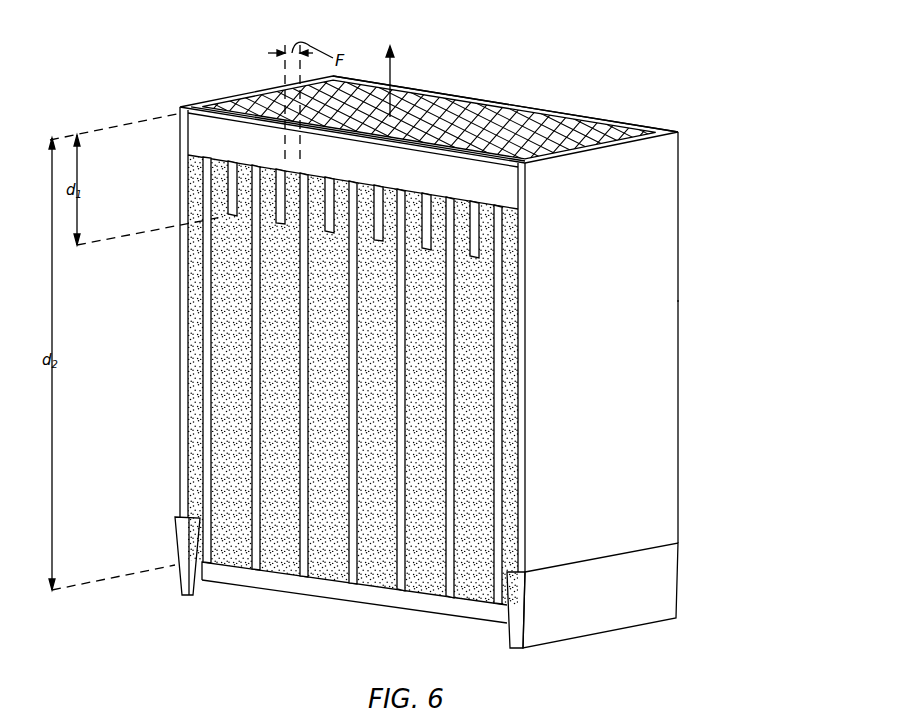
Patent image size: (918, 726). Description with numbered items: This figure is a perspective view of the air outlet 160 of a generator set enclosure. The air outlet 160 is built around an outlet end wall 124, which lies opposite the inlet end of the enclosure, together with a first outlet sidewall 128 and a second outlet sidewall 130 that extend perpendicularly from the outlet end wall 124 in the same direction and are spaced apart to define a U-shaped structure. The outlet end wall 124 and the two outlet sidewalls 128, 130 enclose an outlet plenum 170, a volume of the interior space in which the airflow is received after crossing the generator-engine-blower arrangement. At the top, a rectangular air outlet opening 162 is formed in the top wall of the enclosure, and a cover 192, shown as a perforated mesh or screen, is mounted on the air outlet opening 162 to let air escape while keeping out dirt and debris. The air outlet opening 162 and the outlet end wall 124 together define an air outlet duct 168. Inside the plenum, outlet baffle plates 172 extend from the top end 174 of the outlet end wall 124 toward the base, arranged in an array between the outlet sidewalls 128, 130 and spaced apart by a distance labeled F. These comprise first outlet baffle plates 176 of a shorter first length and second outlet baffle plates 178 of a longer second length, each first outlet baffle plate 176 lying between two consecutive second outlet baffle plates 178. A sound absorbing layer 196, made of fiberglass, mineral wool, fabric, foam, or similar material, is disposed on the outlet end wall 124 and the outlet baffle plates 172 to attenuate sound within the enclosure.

The outlet end wall 124 is at (677, 132).
The first outlet sidewall 128 is at (603, 150).
The second outlet sidewall 130 is at (251, 92).
The air outlet 160 is at (738, 143).
The air outlet opening 162 is at (490, 125).
The air outlet duct 168 is at (505, 343).
The outlet plenum 170 is at (322, 336).
The outlet baffle plates 172 is at (295, 449).
The top end 174 is at (622, 123).
The first outlet baffle plates 176 is at (330, 197).
The second outlet baffle plates 178 is at (307, 375).
The cover 192 is at (467, 97).
The sound absorbing layer 196 is at (458, 461).